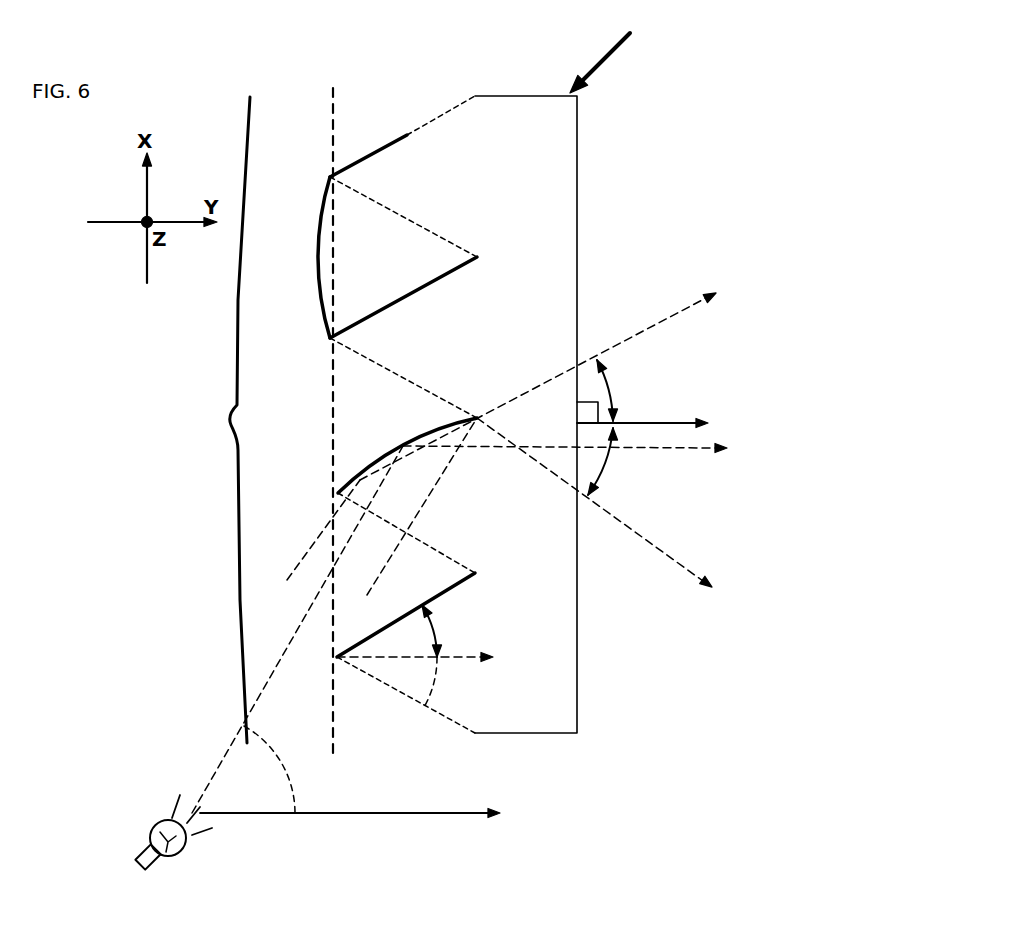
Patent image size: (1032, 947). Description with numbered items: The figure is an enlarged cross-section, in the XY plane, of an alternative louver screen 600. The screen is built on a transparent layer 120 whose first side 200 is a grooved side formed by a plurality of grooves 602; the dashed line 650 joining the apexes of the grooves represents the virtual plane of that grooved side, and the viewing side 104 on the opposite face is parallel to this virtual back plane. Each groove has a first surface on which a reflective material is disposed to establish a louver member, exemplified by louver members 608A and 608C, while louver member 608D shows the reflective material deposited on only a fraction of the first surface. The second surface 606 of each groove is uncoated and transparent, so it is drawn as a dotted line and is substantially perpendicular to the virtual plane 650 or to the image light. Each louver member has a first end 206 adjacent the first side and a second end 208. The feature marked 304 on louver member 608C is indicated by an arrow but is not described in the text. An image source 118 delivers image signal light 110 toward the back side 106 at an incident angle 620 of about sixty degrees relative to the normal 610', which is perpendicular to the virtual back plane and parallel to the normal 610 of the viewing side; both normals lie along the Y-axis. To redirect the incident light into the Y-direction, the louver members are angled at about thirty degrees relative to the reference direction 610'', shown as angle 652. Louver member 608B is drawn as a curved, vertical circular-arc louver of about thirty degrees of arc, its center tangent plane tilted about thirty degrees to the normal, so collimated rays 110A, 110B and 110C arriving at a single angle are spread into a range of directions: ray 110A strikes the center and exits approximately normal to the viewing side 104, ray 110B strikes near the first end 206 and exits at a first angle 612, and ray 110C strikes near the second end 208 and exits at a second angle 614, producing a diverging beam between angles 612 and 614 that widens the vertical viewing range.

The louver screen 600 is at (619, 48).
The viewing side 104 is at (577, 697).
The transparent layer 120 is at (522, 158).
The virtual plane of the grooved side 650 is at (331, 408).
The back side 106 is at (230, 405).
The louver member 608D is at (385, 146).
The grooves 602 is at (318, 250).
The second surface 606 is at (413, 215).
The louver member 608C is at (440, 278).
The reflective surface 304 is at (427, 298).
The second end 208 is at (479, 412).
The curved louver member 608B is at (431, 434).
The first end 206 is at (336, 493).
The louver member 608A is at (457, 586).
The first side 200 is at (337, 657).
The image signal light ray 110A is at (486, 625).
The image signal light ray 110B is at (508, 442).
The image signal light ray 110C is at (557, 517).
The normal of the viewing side 610 is at (662, 419).
The first angle 612 is at (625, 390).
The second angle 614 is at (618, 465).
The reference direction 610'' is at (439, 656).
The louver angle 652 is at (449, 657).
The normal to the virtual back-side plane 610' is at (373, 813).
The incident angle 620 is at (286, 769).
The image source 118 is at (158, 824).
The image signal light 110 is at (169, 834).